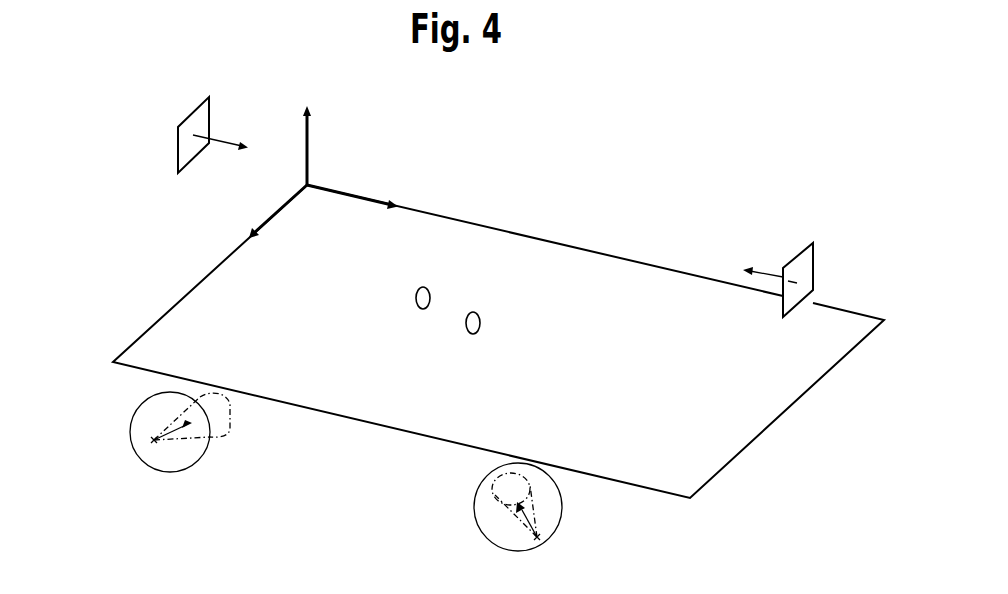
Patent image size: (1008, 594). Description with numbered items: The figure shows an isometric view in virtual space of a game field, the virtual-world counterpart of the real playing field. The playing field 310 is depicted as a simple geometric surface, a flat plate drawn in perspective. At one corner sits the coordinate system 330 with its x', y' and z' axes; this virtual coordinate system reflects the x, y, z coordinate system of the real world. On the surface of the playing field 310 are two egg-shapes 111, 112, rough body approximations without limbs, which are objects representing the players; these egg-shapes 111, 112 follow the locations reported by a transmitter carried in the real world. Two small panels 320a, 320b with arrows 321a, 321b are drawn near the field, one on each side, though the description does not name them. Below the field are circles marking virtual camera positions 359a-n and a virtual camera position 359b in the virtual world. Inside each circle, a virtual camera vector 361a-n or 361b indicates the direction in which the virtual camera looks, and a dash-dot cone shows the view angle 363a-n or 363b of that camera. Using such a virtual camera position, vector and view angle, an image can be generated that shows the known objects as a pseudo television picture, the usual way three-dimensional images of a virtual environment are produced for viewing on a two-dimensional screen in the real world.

The egg-shape 111 is at (413, 303).
The egg-shape 112 is at (465, 325).
The playing field 310 is at (798, 403).
The camera 320a is at (790, 260).
The camera 320b is at (187, 117).
The camera viewing direction 321a is at (758, 270).
The camera viewing direction 321b is at (232, 149).
The coordinate system 330 is at (308, 150).
The virtual camera positions 359a-n is at (563, 507).
The virtual camera position 359b is at (141, 463).
The virtual camera vector 361a-n is at (537, 522).
The virtual camera vector 361b is at (152, 439).
The view angle 363a-n is at (493, 490).
The view angle 363b is at (198, 397).